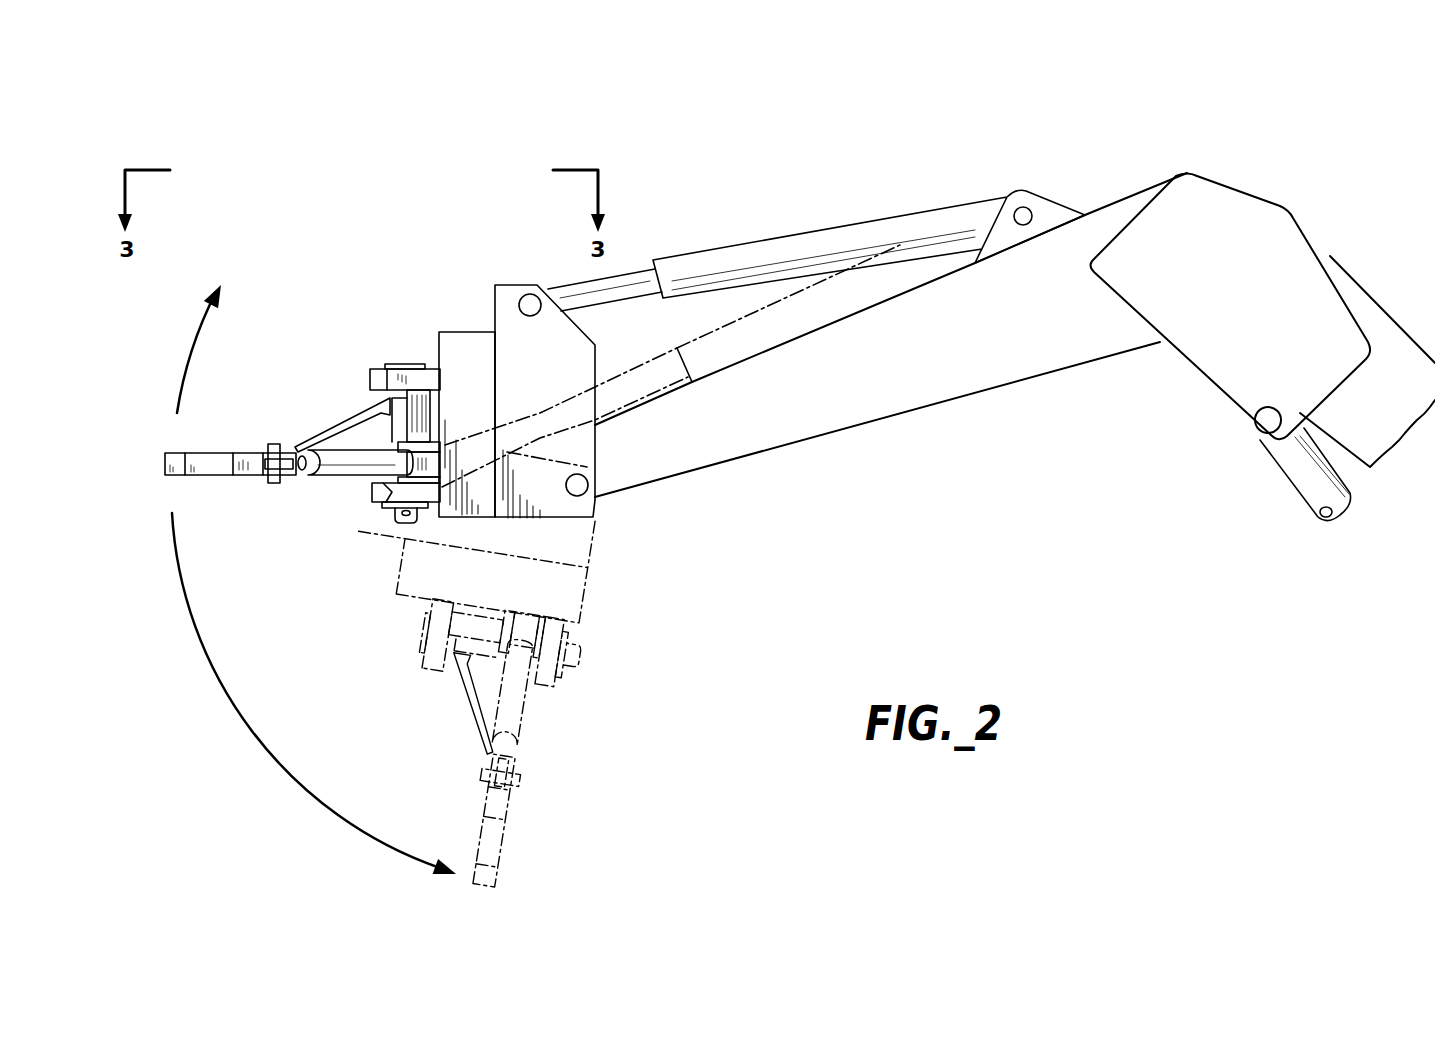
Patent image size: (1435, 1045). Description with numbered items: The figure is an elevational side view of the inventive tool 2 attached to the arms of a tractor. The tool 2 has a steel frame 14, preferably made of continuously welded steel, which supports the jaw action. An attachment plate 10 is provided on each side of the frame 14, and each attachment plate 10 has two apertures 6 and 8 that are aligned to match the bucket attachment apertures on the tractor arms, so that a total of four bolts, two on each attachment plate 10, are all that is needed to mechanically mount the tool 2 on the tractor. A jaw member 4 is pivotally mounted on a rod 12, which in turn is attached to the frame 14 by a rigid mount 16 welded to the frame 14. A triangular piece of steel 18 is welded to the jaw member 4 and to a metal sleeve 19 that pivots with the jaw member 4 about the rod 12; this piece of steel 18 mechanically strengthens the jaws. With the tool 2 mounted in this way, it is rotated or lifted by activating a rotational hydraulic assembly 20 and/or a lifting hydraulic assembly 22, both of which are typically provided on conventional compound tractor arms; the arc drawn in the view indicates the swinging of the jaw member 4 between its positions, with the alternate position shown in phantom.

The tool 2 is at (282, 397).
The jaw member 4 is at (205, 450).
The aperture 6 is at (520, 304).
The aperture 8 is at (578, 490).
The attachment plate 10 is at (534, 390).
The rod 12 is at (408, 363).
The frame 14 is at (459, 390).
The rigid mount 16 is at (373, 369).
The triangular piece of steel 18 is at (350, 428).
The metal sleeve 19 is at (398, 412).
The rotational hydraulic assembly 20 is at (799, 222).
The lifting hydraulic assembly 22 is at (1278, 485).